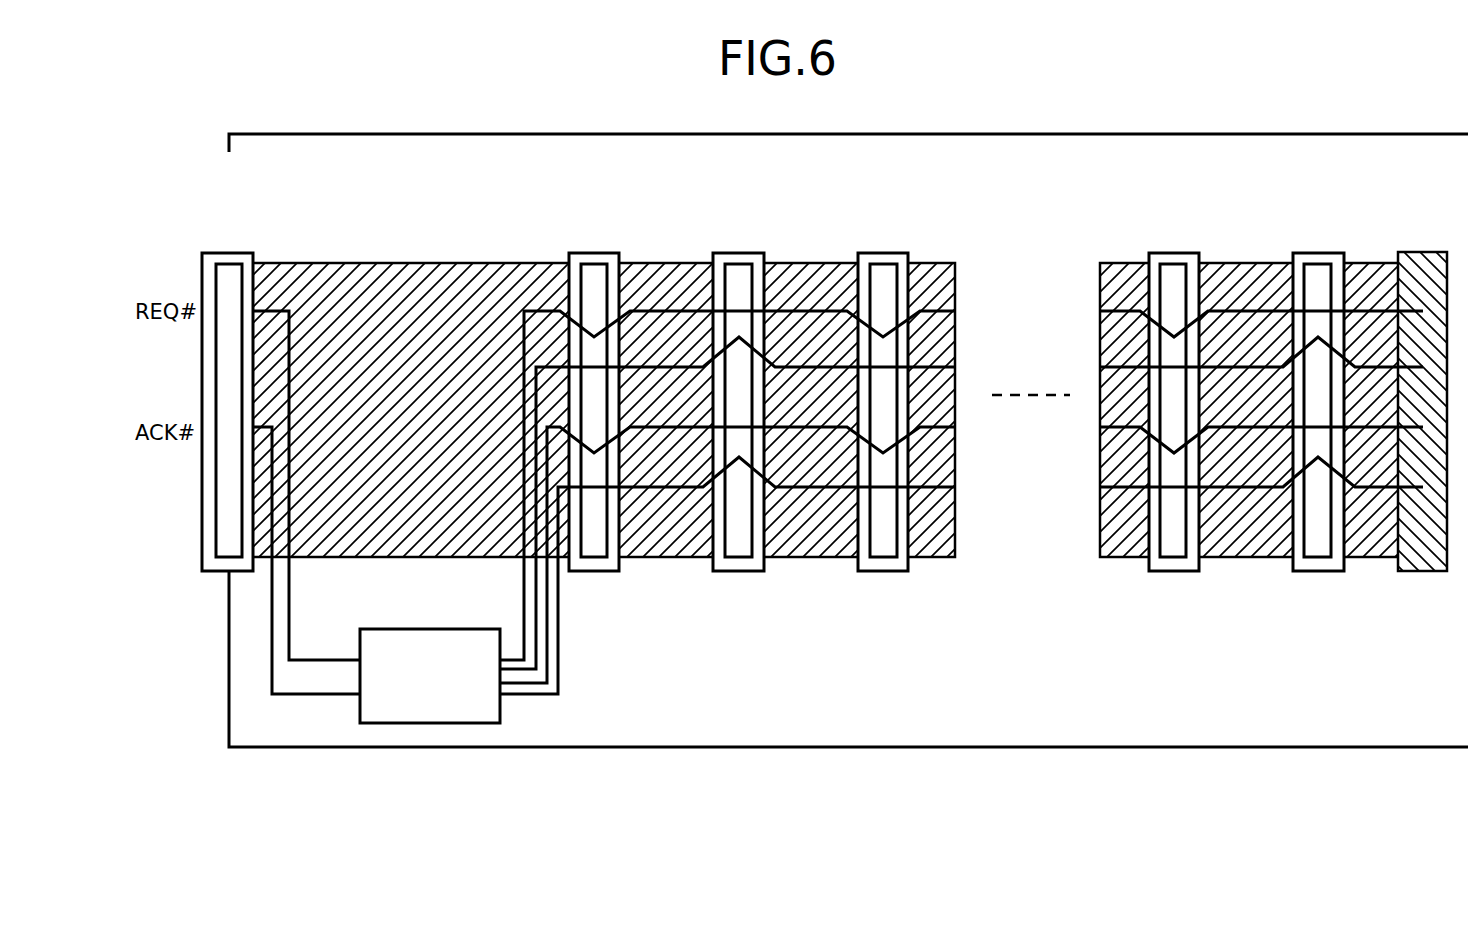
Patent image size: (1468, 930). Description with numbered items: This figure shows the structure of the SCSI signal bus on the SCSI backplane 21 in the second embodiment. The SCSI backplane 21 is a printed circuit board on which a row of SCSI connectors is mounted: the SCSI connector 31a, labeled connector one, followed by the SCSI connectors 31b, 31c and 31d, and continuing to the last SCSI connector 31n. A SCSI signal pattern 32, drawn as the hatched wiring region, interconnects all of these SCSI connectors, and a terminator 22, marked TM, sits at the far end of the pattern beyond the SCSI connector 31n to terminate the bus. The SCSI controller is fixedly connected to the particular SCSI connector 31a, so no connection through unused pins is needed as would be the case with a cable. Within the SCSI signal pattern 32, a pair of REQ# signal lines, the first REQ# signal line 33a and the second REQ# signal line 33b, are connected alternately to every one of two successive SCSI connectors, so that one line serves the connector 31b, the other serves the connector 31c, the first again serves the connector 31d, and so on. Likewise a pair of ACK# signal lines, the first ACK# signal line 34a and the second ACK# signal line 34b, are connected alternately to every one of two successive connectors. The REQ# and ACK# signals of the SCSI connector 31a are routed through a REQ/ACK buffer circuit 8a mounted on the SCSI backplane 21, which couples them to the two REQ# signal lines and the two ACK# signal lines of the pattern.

The SCSI backplane 21 is at (1327, 134).
The terminator 22 is at (1422, 571).
The SCSI connector 31a is at (202, 256).
The SCSI connector 31b is at (600, 571).
The SCSI connector 31c is at (739, 571).
The SCSI connector 31d is at (885, 571).
The SCSI connector 31n is at (1318, 571).
The SCSI signal pattern 32 is at (437, 263).
The REQ#(1) signal line 33a is at (945, 304).
The REQ#(2) signal line 33b is at (945, 360).
The ACK#(1) signal line 34a is at (940, 428).
The ACK#(2) signal line 34b is at (940, 488).
The REQ/ACK buffer circuit 8a is at (500, 712).